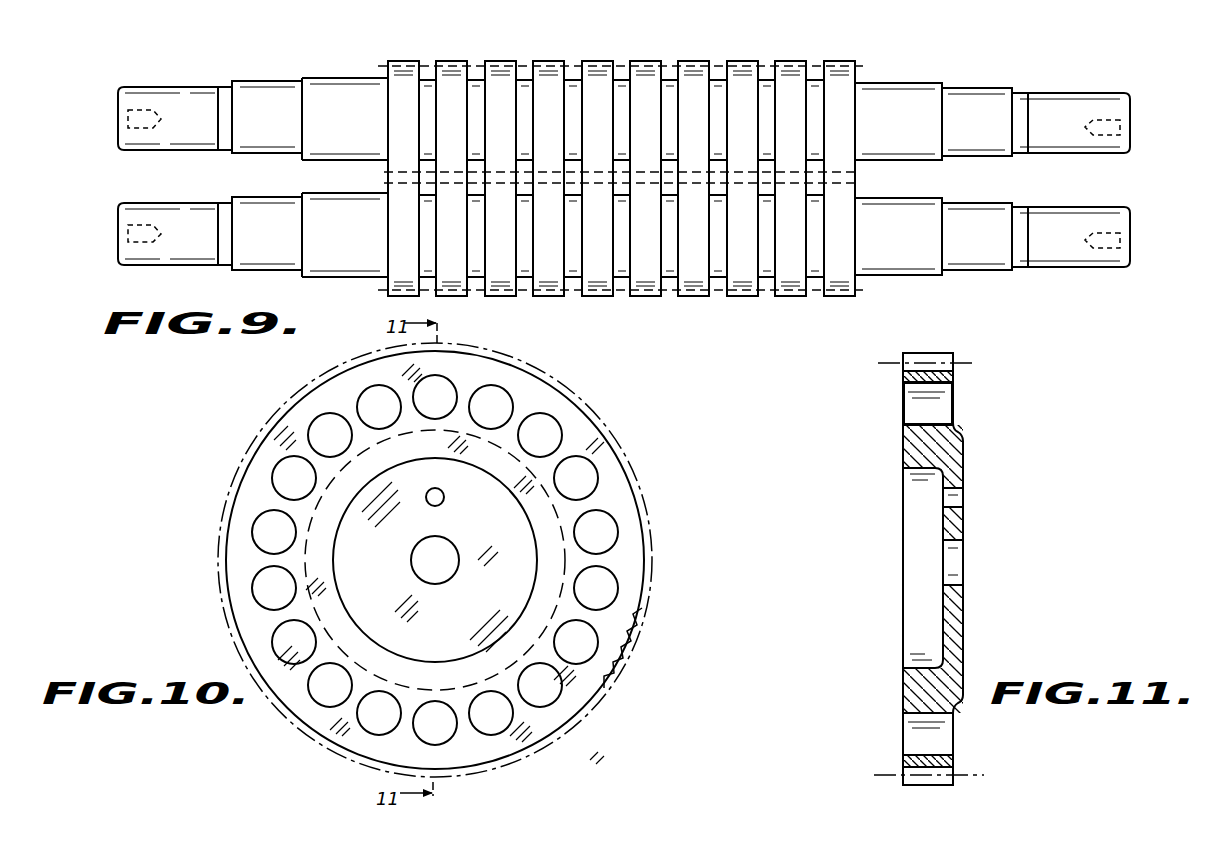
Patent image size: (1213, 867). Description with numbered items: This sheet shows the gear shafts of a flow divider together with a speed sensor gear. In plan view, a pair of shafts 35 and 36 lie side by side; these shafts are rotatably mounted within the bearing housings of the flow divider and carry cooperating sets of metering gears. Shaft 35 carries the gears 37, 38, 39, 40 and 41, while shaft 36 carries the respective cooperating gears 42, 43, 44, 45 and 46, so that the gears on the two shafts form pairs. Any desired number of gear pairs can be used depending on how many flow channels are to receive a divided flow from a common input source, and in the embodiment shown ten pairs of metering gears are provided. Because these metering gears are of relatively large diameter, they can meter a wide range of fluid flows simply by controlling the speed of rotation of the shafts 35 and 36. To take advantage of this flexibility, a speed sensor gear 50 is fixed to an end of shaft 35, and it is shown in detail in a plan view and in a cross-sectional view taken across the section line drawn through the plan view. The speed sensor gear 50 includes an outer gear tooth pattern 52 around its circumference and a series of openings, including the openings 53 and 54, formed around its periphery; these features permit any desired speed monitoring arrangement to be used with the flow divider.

In FIG. 9, the shaft 35 is at (357, 134).
In FIG. 9, the shaft 36 is at (357, 250).
In FIG. 9, the metering gear 37 is at (420, 45).
In FIG. 9, the metering gear 38 is at (468, 45).
In FIG. 9, the metering gear 39 is at (517, 45).
In FIG. 9, the metering gear 40 is at (563, 44).
In FIG. 9, the metering gear 41 is at (612, 44).
In FIG. 9, the metering gear 42 is at (392, 297).
In FIG. 9, the metering gear 43 is at (447, 297).
In FIG. 9, the metering gear 44 is at (497, 297).
In FIG. 9, the metering gear 45 is at (546, 297).
In FIG. 9, the metering gear 46 is at (592, 297).
In FIG. 10, the speed sensor gear 50 is at (656, 515).
In FIG. 11, the speed sensor gear 50 is at (992, 524).
In FIG. 10, the outer gear tooth pattern 52 is at (632, 651).
In FIG. 11, the outer gear tooth pattern 52 is at (948, 339).
In FIG. 10, the opening 53 is at (444, 732).
In FIG. 11, the opening 53 is at (918, 757).
In FIG. 10, the opening 54 is at (597, 483).
In FIG. 11, the opening 54 is at (912, 386).